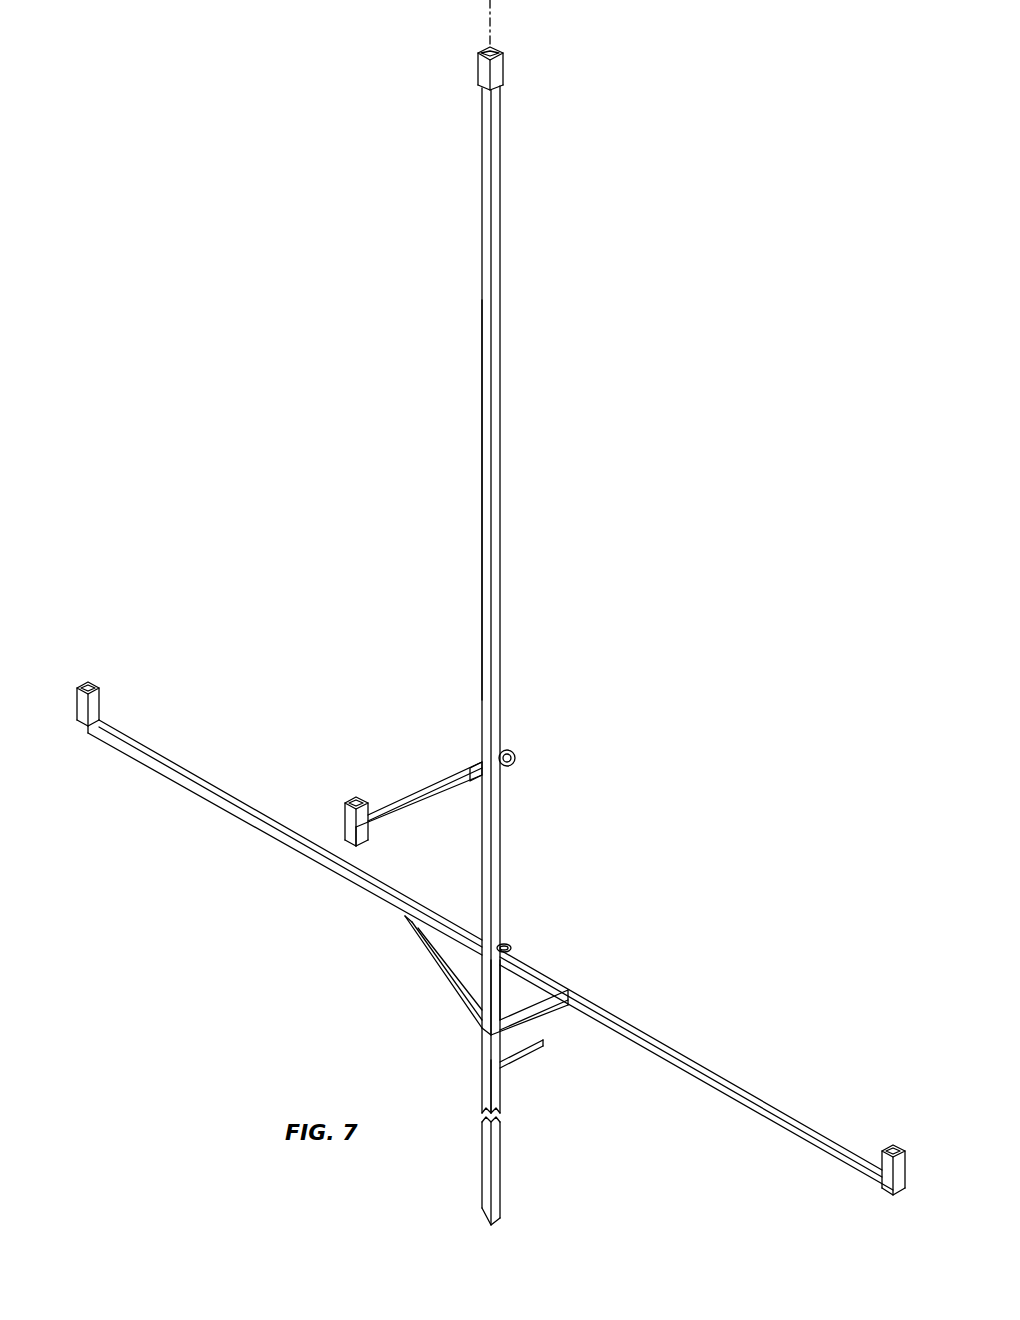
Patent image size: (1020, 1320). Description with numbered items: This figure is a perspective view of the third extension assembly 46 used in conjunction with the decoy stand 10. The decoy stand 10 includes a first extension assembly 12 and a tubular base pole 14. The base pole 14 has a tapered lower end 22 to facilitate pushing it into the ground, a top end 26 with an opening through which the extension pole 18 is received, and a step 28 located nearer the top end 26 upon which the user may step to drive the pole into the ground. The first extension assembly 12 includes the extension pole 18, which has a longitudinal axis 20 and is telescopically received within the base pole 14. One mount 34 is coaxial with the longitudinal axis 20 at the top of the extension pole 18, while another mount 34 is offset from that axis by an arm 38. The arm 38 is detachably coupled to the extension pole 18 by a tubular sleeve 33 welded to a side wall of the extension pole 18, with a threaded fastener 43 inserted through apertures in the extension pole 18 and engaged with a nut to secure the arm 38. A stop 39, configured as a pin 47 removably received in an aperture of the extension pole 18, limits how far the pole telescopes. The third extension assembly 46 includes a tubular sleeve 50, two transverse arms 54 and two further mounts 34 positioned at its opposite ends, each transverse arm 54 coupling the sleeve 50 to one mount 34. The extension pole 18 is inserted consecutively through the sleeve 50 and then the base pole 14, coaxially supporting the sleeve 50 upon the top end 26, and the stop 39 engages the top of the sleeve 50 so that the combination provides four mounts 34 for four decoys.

The decoy stand 10 is at (308, 462).
The first extension assembly 12 is at (535, 330).
The tubular base pole 14 is at (497, 1097).
The extension pole 18 is at (497, 540).
The longitudinal axis 20 is at (494, 22).
The tapered lower end 22 is at (500, 1222).
The top end 26 is at (480, 1032).
The step 28 is at (547, 1047).
The tubular sleeve 33 is at (478, 758).
The mount 34 is at (488, 205).
The arm 38 is at (425, 790).
The stop 39 is at (520, 932).
The threaded fastener 43 is at (515, 752).
The third extension assembly 46 is at (640, 964).
The pin 47 is at (503, 942).
The tubular sleeve 50 is at (497, 990).
The transverse arm 54 is at (213, 782).